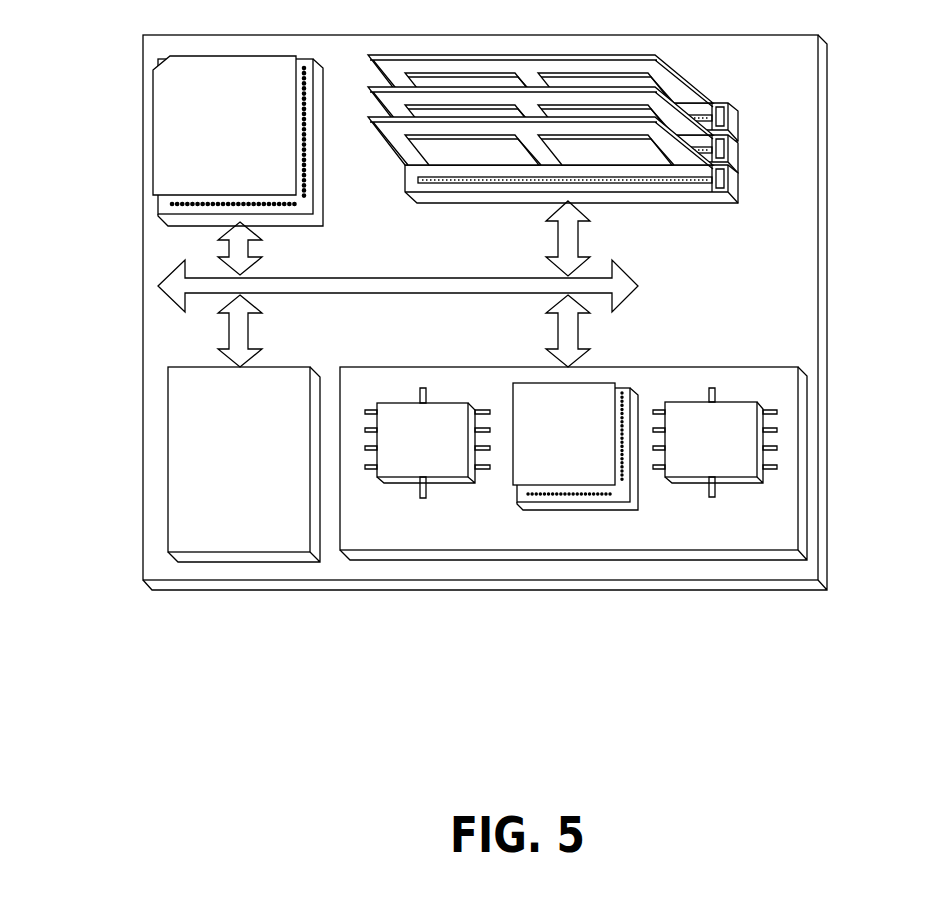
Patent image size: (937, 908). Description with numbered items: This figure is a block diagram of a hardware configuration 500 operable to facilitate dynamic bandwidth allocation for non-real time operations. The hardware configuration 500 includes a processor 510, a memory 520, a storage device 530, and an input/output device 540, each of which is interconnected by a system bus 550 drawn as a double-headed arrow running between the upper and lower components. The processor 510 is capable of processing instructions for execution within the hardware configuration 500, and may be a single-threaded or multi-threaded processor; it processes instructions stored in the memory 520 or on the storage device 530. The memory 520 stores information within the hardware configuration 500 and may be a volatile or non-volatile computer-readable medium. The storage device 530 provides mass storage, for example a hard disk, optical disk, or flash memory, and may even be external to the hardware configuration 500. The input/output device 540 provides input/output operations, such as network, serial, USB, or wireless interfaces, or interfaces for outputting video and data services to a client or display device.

The hardware configuration 500 is at (123, 696).
The processor 510 is at (285, 190).
The memory 520 is at (702, 102).
The storage device 530 is at (297, 543).
The input/output device 540 is at (762, 367).
The system bus 550 is at (393, 294).